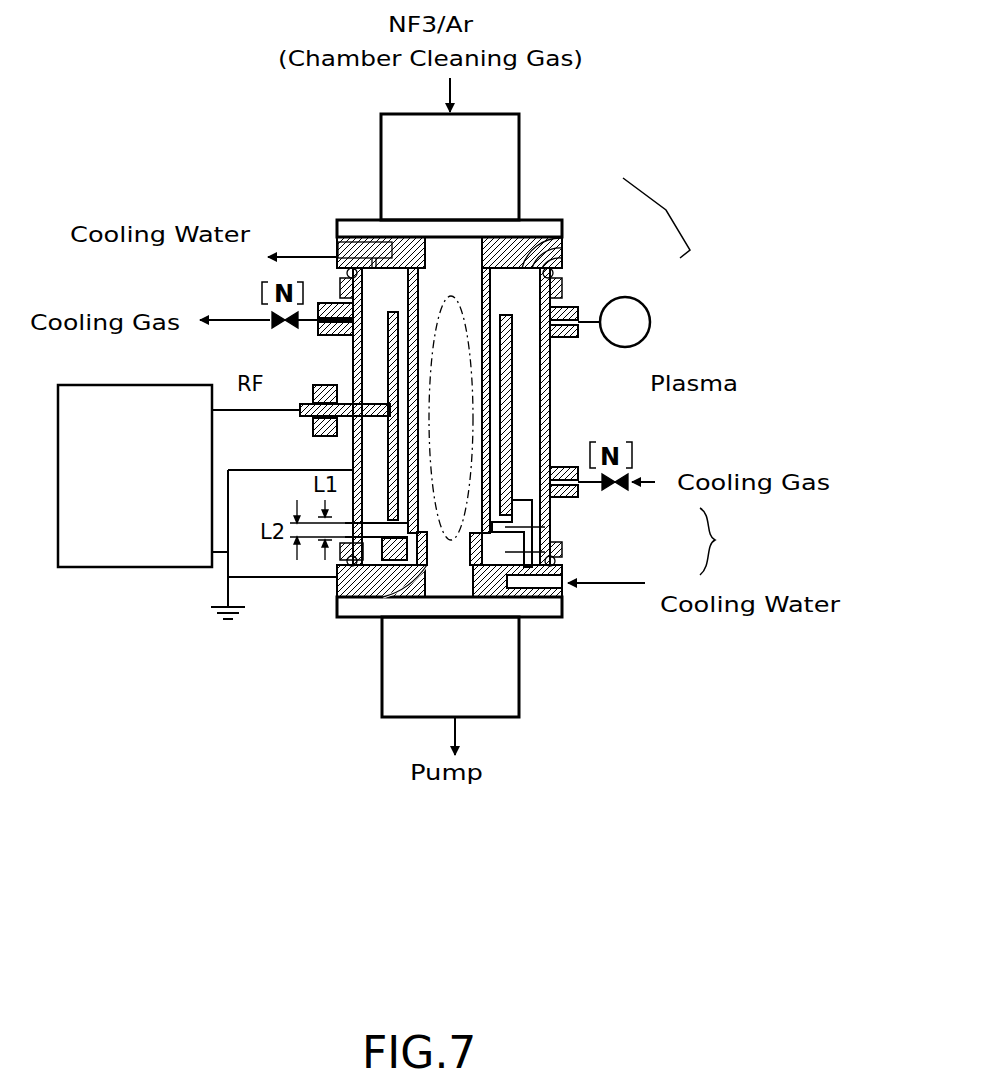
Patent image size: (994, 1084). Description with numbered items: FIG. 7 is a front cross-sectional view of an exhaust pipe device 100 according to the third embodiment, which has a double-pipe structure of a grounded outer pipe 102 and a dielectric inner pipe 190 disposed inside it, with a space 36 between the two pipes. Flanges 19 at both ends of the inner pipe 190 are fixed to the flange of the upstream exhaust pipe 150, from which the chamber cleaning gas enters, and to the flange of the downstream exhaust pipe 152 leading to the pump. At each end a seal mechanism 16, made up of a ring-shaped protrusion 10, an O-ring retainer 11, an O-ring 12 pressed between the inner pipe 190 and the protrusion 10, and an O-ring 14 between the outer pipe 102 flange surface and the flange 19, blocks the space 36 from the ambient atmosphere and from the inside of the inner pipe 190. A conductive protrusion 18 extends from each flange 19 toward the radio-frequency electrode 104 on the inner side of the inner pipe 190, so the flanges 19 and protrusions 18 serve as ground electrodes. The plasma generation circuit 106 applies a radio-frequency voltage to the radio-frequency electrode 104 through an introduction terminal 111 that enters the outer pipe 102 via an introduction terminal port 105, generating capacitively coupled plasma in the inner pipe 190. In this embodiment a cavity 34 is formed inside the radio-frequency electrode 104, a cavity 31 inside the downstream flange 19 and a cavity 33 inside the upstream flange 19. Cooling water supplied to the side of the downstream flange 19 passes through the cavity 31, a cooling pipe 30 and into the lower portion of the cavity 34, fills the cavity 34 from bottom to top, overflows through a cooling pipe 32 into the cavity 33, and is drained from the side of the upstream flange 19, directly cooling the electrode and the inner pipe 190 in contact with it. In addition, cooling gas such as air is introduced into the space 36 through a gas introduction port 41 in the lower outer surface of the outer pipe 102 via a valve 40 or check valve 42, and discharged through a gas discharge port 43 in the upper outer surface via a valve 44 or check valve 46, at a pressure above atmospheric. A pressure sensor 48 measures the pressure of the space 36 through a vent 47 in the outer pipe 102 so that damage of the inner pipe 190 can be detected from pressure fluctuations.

The exhaust pipe device 100 is at (712, 256).
The protrusion 10 is at (565, 248).
The O-ring retainer 11 is at (565, 260).
The O-ring 12 is at (565, 238).
The O-ring 14 is at (556, 272).
The seal mechanism 16 is at (685, 376).
The protrusion 18 is at (500, 237).
The flange 19 is at (337, 238).
The cooling pipe 30 is at (549, 505).
The cavity 31 is at (552, 604).
The cooling pipe 32 is at (325, 366).
The cavity 33 is at (370, 255).
The cavity 34 is at (512, 402).
The space 36 is at (385, 425).
The valve 40 is at (700, 457).
The check valve 42 is at (630, 476).
The gas introduction port 41 is at (555, 468).
The gas discharge port 43 is at (327, 333).
The valve 44 is at (206, 295).
The check valve 46 is at (268, 307).
The vent 47 is at (562, 338).
The pressure sensor 48 is at (650, 322).
The outer pipe 102 is at (550, 407).
The radio-frequency electrode 104 is at (545, 378).
The introduction terminal port 105 is at (303, 380).
The plasma generation circuit 106 is at (140, 568).
The introduction terminal 111 is at (300, 413).
The exhaust pipe 150 is at (519, 150).
The exhaust pipe 152 is at (519, 700).
The inner pipe 190 is at (563, 297).